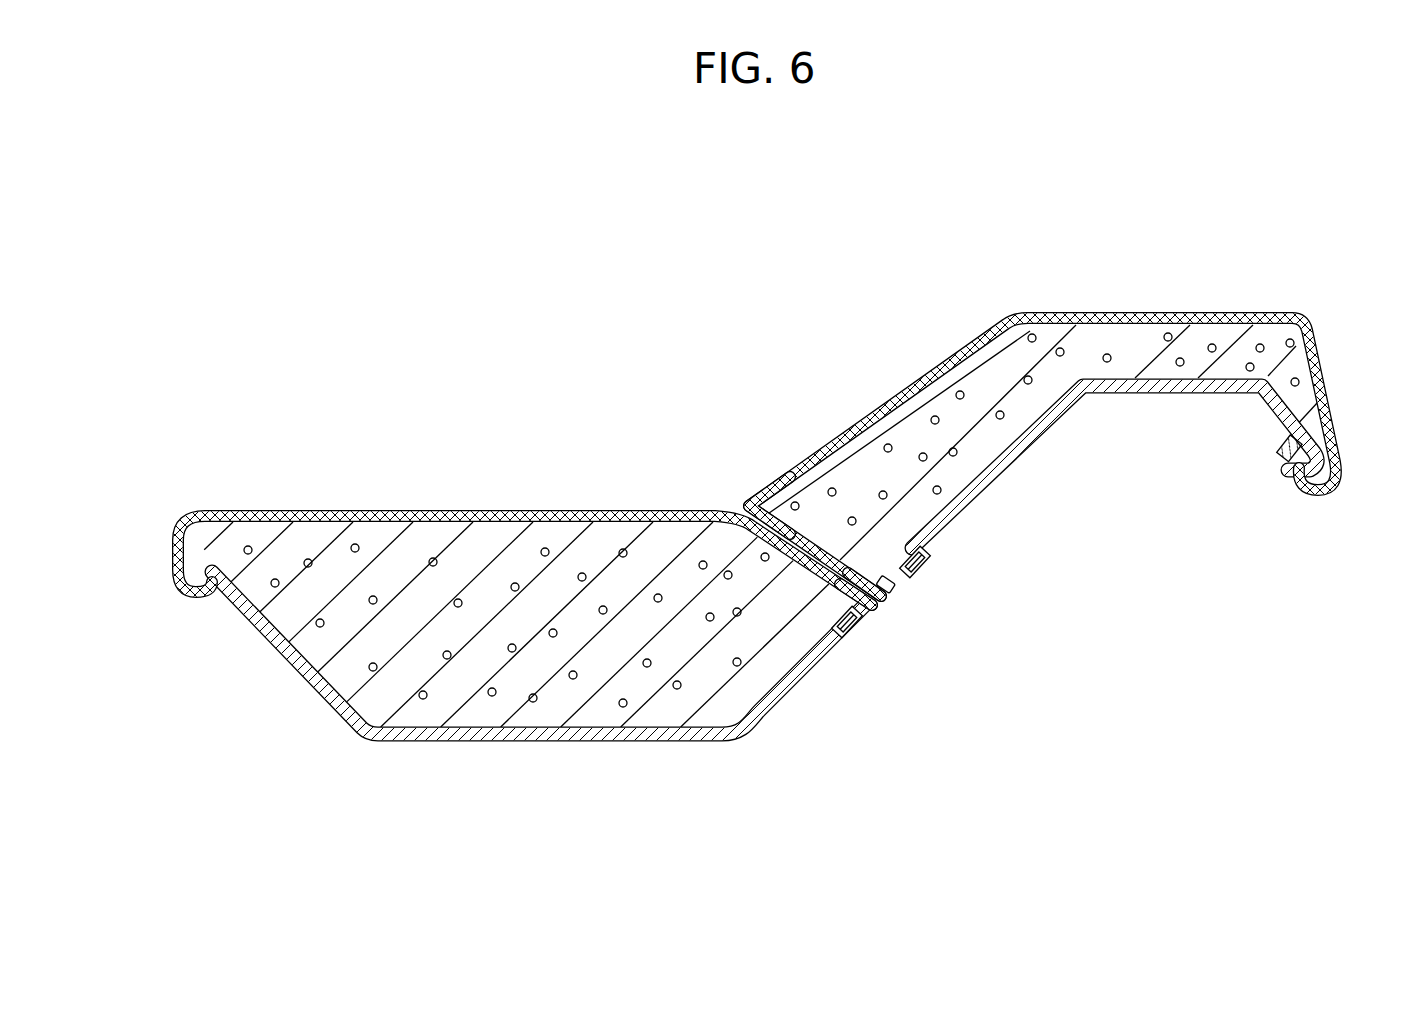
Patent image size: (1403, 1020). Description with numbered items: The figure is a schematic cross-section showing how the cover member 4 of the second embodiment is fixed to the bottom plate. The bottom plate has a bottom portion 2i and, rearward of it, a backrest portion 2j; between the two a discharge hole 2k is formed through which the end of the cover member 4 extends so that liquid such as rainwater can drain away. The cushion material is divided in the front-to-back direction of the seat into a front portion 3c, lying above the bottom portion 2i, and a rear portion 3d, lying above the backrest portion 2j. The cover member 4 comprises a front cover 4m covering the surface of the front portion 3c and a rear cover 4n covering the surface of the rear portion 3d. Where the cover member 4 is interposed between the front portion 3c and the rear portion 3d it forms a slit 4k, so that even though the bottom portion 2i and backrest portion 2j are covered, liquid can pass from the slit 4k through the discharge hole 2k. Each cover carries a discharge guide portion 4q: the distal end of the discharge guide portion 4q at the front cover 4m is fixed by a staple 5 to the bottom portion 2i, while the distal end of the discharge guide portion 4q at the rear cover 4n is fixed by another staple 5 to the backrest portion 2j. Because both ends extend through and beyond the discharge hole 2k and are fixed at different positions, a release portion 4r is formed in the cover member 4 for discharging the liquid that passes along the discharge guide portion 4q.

The cover member 4 is at (757, 476).
The front cover 4m is at (490, 514).
The rear cover 4n is at (905, 388).
The slit 4k is at (743, 500).
The release portion 4r is at (882, 612).
The discharge guide portion 4q is at (900, 588).
The staple 5 is at (912, 568).
The discharge hole 2k is at (886, 601).
The bottom portion 2i is at (548, 740).
The backrest portion 2j is at (1020, 450).
The front portion 3c is at (410, 714).
The rear portion 3d is at (1028, 408).